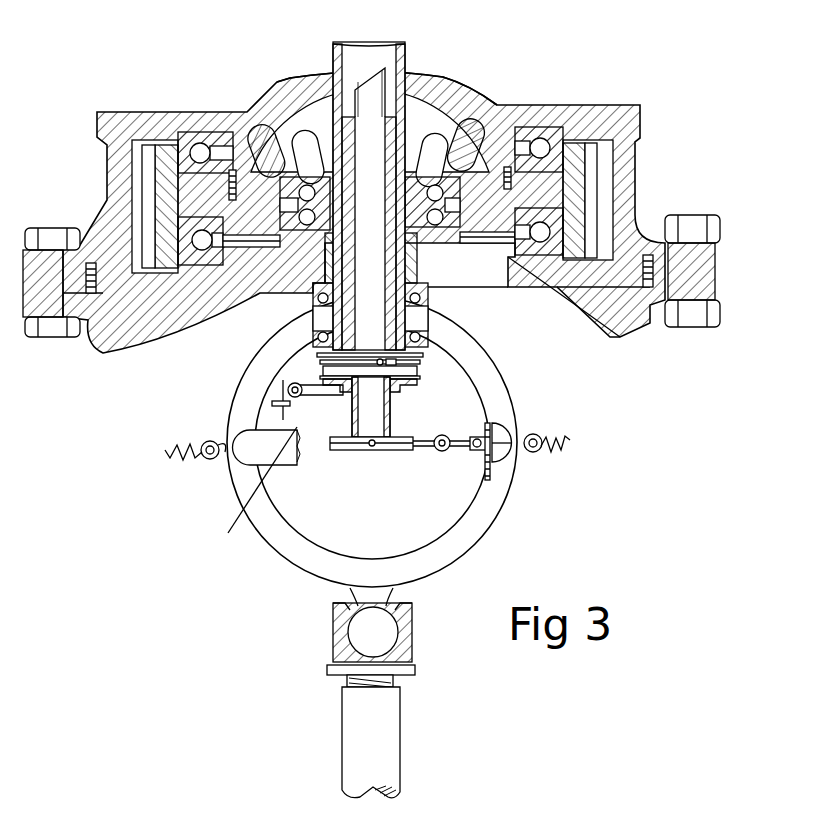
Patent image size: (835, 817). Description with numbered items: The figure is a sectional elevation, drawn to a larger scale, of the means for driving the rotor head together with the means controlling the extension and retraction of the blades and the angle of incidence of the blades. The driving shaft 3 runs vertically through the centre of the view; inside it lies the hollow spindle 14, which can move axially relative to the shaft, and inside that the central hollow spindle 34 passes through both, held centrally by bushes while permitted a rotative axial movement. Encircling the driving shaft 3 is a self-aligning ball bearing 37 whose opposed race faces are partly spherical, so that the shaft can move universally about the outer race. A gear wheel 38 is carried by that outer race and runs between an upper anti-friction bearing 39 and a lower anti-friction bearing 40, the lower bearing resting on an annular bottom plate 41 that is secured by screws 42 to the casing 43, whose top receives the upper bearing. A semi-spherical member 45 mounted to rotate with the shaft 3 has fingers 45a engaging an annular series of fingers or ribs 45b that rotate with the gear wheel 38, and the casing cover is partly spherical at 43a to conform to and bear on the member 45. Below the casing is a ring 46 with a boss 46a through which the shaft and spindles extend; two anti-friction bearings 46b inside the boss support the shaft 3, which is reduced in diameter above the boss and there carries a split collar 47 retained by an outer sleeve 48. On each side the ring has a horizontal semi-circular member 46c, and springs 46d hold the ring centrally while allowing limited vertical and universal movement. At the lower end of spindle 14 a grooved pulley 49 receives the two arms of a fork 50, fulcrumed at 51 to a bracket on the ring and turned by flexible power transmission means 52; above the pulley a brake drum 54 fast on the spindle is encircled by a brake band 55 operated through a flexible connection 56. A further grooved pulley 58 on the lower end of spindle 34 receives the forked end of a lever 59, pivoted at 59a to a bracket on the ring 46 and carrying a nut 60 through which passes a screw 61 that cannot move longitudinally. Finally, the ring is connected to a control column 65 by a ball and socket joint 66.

The driving shaft 3 is at (405, 60).
The spindle 14 is at (335, 108).
The central hollow spindle 34 is at (368, 103).
The self-aligning ball bearing 37 is at (305, 225).
The gear wheel 38 is at (577, 173).
The anti-friction bearing 39 is at (538, 142).
The anti-friction bearing 40 is at (492, 281).
The annular bottom plate 41 is at (608, 280).
The screws 42 is at (647, 288).
The casing 43 is at (622, 207).
The partly spherical cover formation 43a is at (447, 77).
The semi-spherical member 45 is at (430, 105).
The fingers 45a is at (462, 132).
The fingers or ribs 45b is at (232, 180).
The ring 46 is at (498, 393).
The boss 46a is at (317, 295).
The anti-friction bearings 46b is at (427, 310).
The horizontal semi-circular member 46c is at (250, 457).
The springs 46d is at (168, 452).
The split collar 47 is at (410, 256).
The outer sleeve 48 is at (425, 272).
The pulley 49 is at (342, 390).
The fork 50 is at (323, 378).
The fulcrum 51 is at (288, 392).
The flexible power transmission means 52 is at (273, 415).
The brake drum 54 is at (317, 357).
The brake band 55 is at (247, 492).
The flexible connection 56 is at (483, 365).
The grooved pulley 58 is at (348, 450).
The lever 59 is at (420, 448).
The pivot 59a is at (443, 452).
The nut 60 is at (494, 440).
The screw 61 is at (490, 468).
The control column 65 is at (362, 704).
The ball and socket joint 66 is at (360, 623).